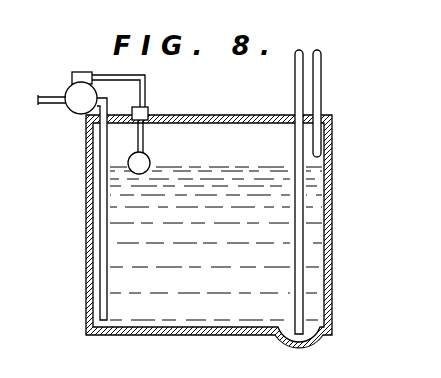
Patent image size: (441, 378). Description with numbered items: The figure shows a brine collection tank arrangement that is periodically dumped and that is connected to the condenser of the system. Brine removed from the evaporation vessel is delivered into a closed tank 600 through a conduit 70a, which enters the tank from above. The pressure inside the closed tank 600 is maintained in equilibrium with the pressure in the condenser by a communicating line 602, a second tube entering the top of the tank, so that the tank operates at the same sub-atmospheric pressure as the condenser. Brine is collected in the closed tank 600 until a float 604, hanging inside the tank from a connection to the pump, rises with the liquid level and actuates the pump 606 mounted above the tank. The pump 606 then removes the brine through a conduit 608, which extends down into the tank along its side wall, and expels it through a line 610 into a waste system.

The closed tank 600 is at (333, 147).
The communicating line 602 is at (322, 83).
The conduit 70a is at (288, 88).
The float 604 is at (149, 158).
The pump 606 is at (68, 87).
The conduit 608 is at (108, 257).
The line 610 is at (37, 102).